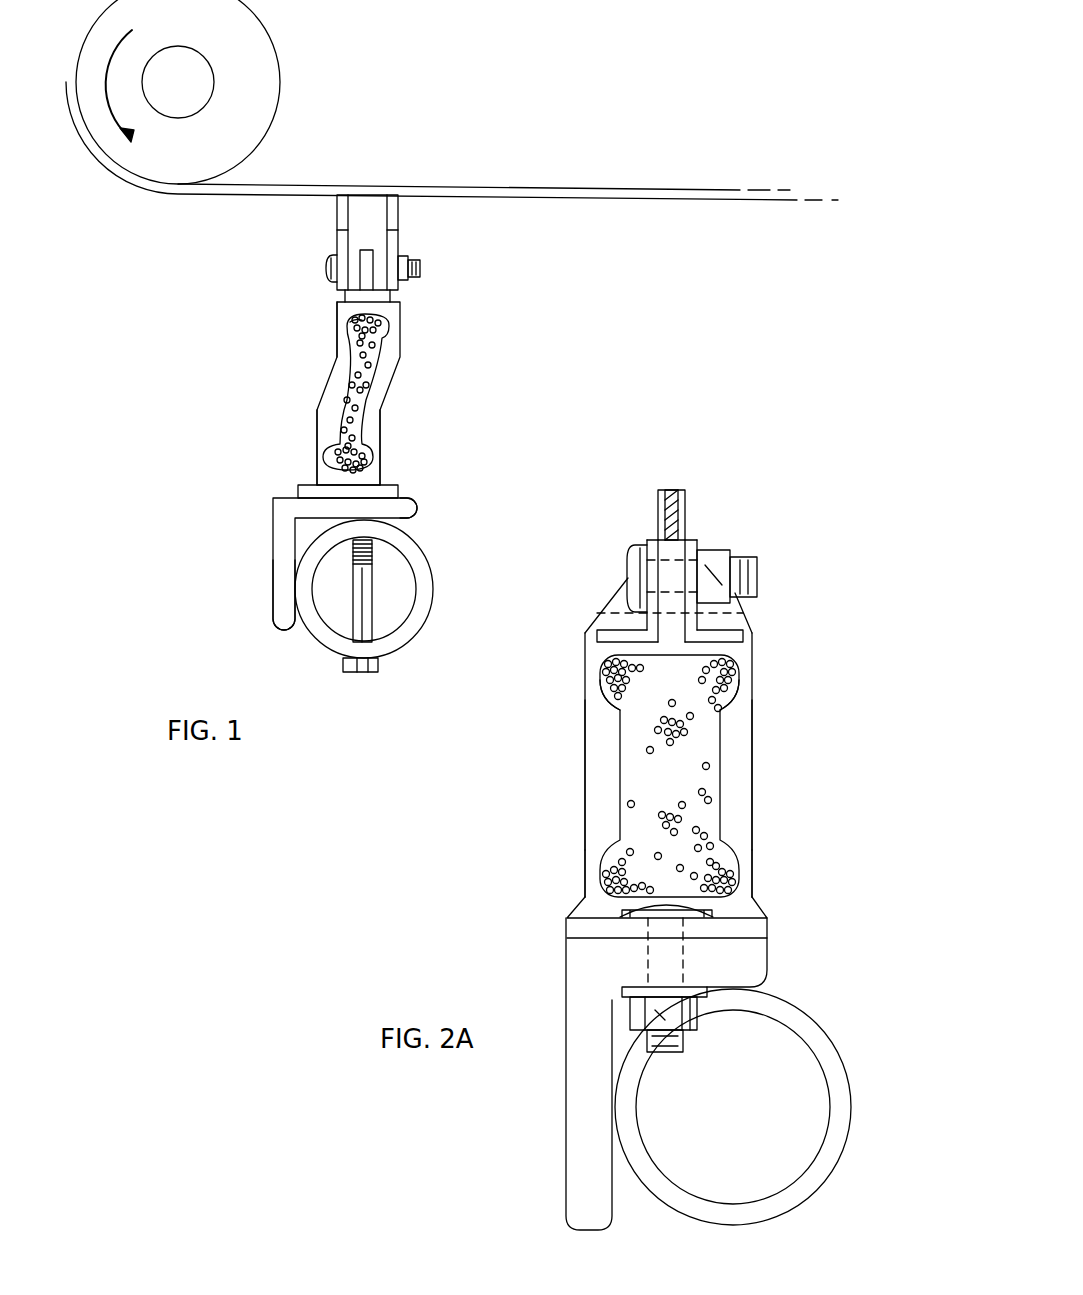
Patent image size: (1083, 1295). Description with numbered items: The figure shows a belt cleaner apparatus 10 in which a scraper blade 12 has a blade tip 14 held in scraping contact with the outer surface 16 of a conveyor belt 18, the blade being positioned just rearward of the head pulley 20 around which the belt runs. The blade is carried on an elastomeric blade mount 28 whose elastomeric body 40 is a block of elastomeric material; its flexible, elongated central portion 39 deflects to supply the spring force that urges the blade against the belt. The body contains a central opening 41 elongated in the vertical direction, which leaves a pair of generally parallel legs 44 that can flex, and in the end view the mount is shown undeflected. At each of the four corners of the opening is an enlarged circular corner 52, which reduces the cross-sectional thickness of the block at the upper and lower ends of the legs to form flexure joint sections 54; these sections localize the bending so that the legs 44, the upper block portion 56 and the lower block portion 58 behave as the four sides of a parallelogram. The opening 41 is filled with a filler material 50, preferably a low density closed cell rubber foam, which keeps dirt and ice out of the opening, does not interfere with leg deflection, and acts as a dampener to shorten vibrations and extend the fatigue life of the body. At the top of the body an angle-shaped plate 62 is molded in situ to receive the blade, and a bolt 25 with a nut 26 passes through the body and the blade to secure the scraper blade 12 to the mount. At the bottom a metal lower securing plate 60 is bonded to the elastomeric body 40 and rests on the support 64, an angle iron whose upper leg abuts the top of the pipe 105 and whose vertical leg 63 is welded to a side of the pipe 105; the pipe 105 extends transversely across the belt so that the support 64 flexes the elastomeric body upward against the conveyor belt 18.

In FIG. 1, the belt cleaner apparatus 10 is at (598, 228).
In FIG. 2A, the belt cleaner apparatus 10 is at (800, 593).
In FIG. 1, the scraper blade 12 is at (325, 229).
In FIG. 2A, the scraper blade 12 is at (685, 527).
In FIG. 2A, the blade tip 14 is at (670, 490).
In FIG. 1, the outer surface of conveyor belt 16 is at (521, 200).
In FIG. 1, the conveyor belt 18 is at (600, 0).
In FIG. 1, the head pulley 20 is at (262, 62).
In FIG. 1, the bolt 25 is at (330, 268).
In FIG. 2A, the bolt 25 is at (637, 578).
In FIG. 1, the nut 26 is at (406, 258).
In FIG. 2A, the nut 26 is at (727, 576).
In FIG. 1, the elastomeric block 28 is at (430, 353).
In FIG. 2A, the central portion 39 is at (765, 785).
In FIG. 1, the elastomeric body 40 is at (305, 420).
In FIG. 2A, the elastomeric body 40 is at (765, 875).
In FIG. 1, the central opening 41 is at (376, 424).
In FIG. 2A, the central opening 41 is at (680, 791).
In FIG. 1, the legs 44 is at (330, 390).
In FIG. 2A, the legs 44 is at (735, 737).
In FIG. 1, the filler material 50 is at (360, 355).
In FIG. 2A, the filler material 50 is at (692, 695).
In FIG. 1, the enlarged circular corner 52 is at (380, 325).
In FIG. 2A, the enlarged circular corner 52 is at (600, 668).
In FIG. 1, the flexure joint sections 54 is at (340, 325).
In FIG. 2A, the flexure joint sections 54 is at (745, 678).
In FIG. 1, the upper block portion 56 is at (372, 310).
In FIG. 1, the lower block portion 58 is at (335, 480).
In FIG. 2A, the lower securing plate 60 is at (757, 930).
In FIG. 1, the angle-shaped plate 62 is at (415, 510).
In FIG. 1, the vertical leg of angle iron 63 is at (278, 613).
In FIG. 1, the support 64 is at (240, 574).
In FIG. 2A, the support 64 is at (822, 988).
In FIG. 1, the pipe 105 is at (418, 638).
In FIG. 2A, the pipe 105 is at (830, 1048).